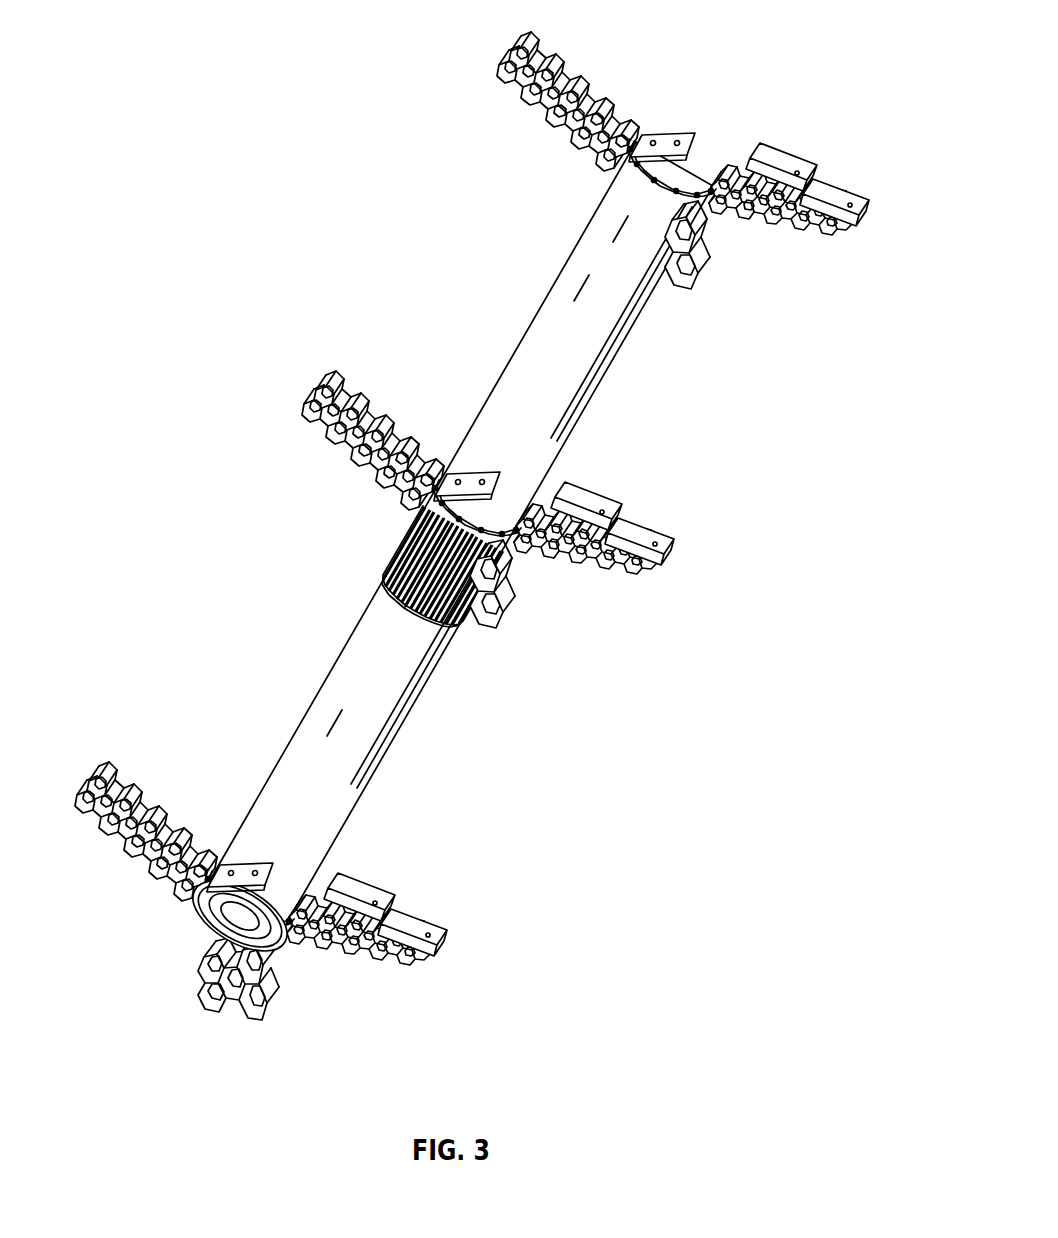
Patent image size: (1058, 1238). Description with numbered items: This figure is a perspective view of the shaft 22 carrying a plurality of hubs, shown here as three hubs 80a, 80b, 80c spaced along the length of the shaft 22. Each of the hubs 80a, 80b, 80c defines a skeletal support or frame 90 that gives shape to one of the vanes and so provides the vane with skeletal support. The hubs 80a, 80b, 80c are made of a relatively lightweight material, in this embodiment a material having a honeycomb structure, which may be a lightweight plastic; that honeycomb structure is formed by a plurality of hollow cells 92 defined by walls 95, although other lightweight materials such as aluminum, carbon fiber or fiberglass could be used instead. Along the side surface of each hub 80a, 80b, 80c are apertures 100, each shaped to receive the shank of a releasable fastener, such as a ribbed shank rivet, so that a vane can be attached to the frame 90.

The shaft 22 is at (397, 702).
The hub 80a is at (150, 785).
The hub 80b is at (573, 480).
The hub 80c is at (653, 472).
The skeletal support or frame 90 is at (722, 408).
The hollow cells 92 is at (748, 243).
The walls 95 is at (699, 126).
The apertures 100 is at (653, 537).